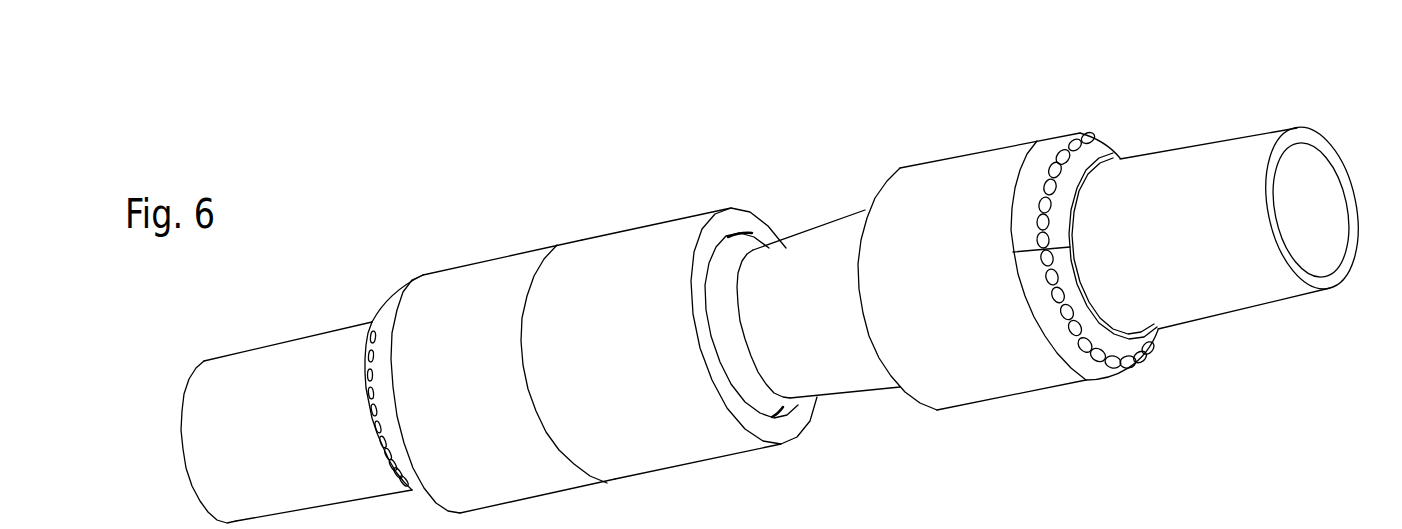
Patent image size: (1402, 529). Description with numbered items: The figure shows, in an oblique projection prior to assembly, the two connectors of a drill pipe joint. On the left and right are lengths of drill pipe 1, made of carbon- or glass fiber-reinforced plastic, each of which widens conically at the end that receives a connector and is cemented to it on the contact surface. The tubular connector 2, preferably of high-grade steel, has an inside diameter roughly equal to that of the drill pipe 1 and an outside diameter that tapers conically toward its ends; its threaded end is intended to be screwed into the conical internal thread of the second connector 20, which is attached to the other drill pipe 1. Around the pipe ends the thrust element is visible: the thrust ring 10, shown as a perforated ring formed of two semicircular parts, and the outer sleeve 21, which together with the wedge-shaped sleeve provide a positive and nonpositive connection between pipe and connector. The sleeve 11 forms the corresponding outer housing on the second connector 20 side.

The drill pipe 1 is at (285, 418).
The tubular connector 2 is at (807, 283).
The thrust ring 10 is at (378, 353).
The coupling sleeve 11 is at (947, 253).
The second connector 20 is at (603, 332).
The outer sleeve 21 is at (485, 357).